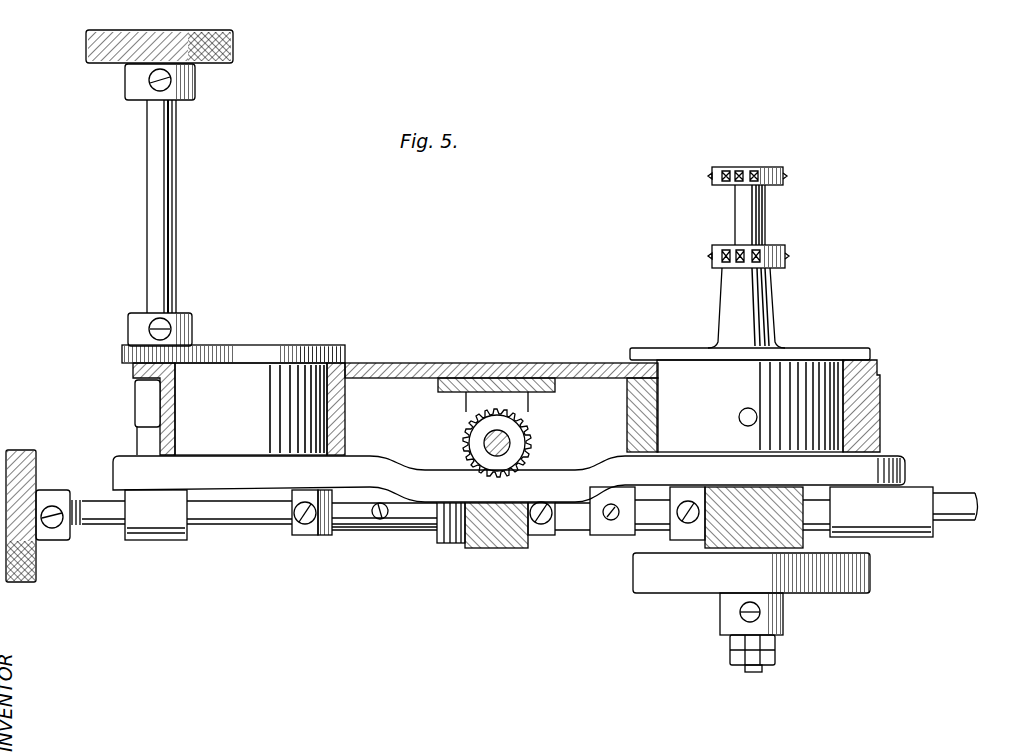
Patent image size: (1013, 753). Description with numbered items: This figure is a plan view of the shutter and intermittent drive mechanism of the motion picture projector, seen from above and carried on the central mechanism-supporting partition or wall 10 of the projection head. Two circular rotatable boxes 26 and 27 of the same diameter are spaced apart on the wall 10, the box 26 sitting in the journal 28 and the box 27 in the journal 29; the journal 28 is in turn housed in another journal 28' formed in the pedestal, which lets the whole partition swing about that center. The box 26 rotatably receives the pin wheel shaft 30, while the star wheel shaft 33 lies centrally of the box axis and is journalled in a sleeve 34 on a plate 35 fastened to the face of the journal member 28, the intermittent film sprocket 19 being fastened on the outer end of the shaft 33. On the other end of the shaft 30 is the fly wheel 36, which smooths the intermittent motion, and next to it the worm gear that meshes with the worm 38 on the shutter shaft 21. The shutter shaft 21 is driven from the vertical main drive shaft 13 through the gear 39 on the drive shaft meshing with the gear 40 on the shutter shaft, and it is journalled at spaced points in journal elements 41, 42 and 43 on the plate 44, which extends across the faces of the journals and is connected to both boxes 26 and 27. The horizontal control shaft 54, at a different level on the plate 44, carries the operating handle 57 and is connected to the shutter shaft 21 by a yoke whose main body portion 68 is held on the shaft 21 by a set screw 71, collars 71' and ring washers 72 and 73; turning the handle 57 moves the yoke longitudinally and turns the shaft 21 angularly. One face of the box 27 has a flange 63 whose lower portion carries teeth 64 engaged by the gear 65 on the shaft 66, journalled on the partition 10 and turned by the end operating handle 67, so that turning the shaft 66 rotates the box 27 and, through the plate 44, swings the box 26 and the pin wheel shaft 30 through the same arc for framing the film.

The mechanism-supporting partition or wall 10 is at (596, 364).
The main drive shaft 13 is at (512, 442).
The intermittent film sprocket 19 is at (783, 174).
The shutter shaft 21 is at (237, 526).
The circular housing or rotatable box 26 is at (750, 406).
The circular housing or rotatable box 27 is at (230, 409).
The journal 28 is at (677, 406).
The journal 28' is at (618, 415).
The journal 29 is at (345, 412).
The pin wheel shaft 30 is at (755, 672).
The star wheel shaft 33 is at (752, 220).
The sleeve 34 is at (750, 303).
The plate 35 is at (818, 340).
The fly wheel 36 is at (830, 592).
The worm 38 is at (740, 540).
The gear 39 is at (462, 440).
The gear 40 is at (504, 549).
The journal element 41 is at (881, 512).
The journal element 42 is at (600, 537).
The journal element 43 is at (150, 540).
The plate 44 is at (297, 462).
The control shaft 54 is at (78, 498).
The operating handle 57 is at (40, 458).
The flange 63 is at (300, 346).
The teeth 64 is at (222, 334).
The gear 65 is at (205, 351).
The shaft 66 is at (158, 210).
The operating handle 67 is at (116, 66).
The yoke member main body portion 68 is at (405, 532).
The set screw 71 is at (368, 534).
The collar 71' is at (298, 531).
The ring washer 72 is at (326, 537).
The ring washer 73 is at (453, 546).